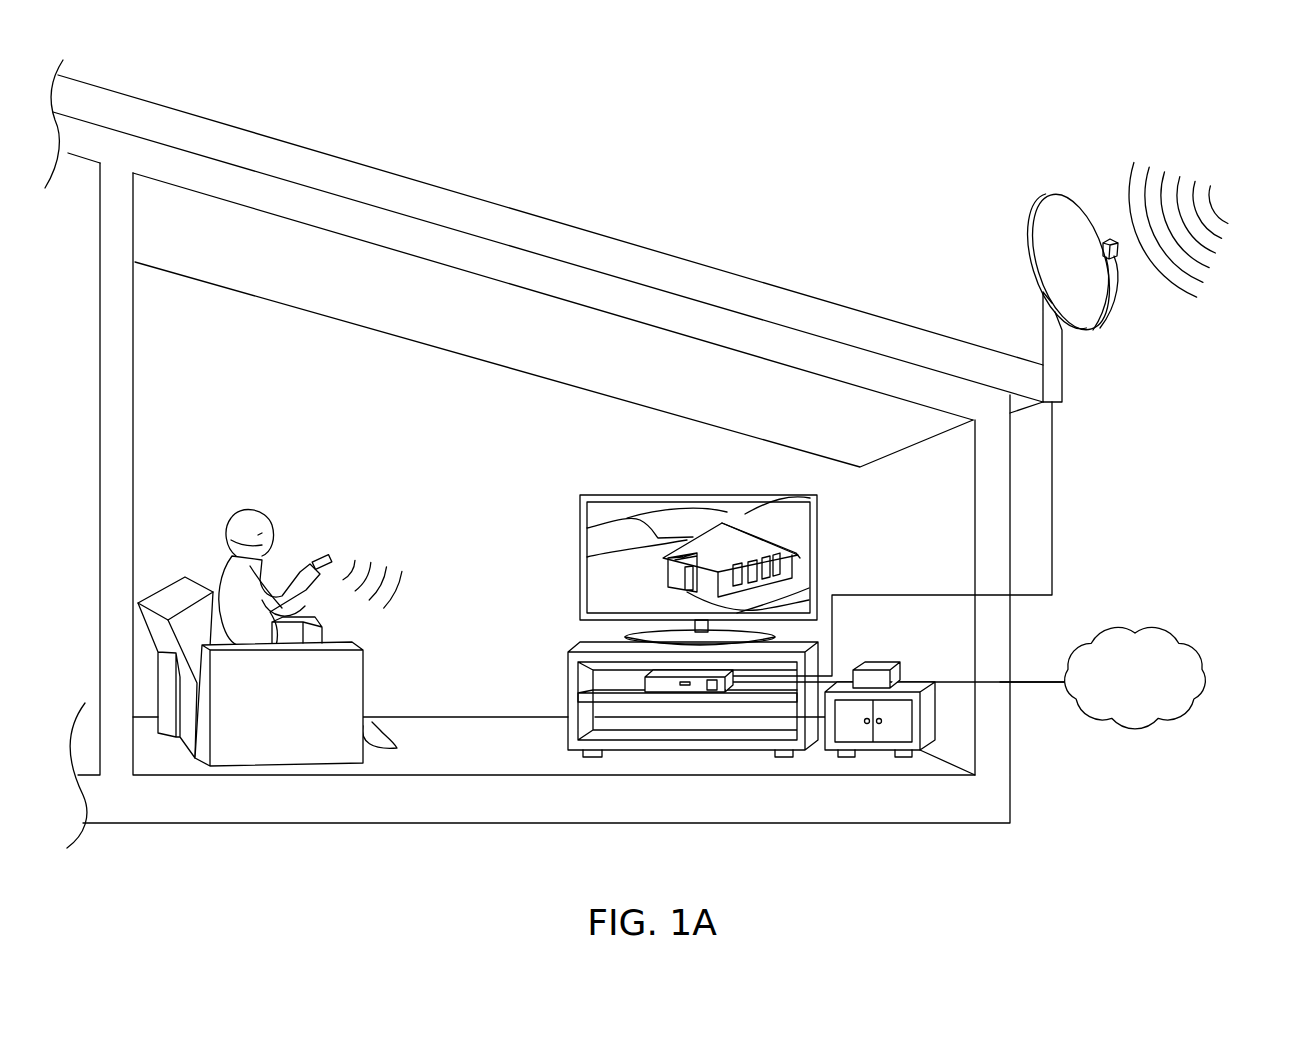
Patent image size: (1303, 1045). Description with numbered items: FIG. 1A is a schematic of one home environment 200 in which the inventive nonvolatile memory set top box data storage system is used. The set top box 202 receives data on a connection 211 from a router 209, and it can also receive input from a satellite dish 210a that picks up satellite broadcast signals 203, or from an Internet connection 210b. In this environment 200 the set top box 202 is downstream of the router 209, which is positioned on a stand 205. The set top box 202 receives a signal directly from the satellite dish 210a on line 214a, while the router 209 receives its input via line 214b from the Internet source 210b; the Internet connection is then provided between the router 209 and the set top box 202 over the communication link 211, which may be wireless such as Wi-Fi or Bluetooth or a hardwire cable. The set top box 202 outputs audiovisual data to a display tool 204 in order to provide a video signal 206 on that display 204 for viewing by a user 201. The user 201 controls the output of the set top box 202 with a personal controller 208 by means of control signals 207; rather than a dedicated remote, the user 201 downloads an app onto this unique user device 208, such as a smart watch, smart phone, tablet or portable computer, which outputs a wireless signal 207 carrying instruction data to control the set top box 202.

The environment 200 is at (968, 88).
The user 201 is at (218, 565).
The set top box 202 is at (640, 678).
The satellite broadcast signals 203 is at (1198, 162).
The television display 204 is at (650, 497).
The stand 205 is at (878, 742).
The video signal 206 is at (683, 512).
The control signals 207 is at (440, 582).
The personal controller 208 is at (320, 556).
The router 209 is at (893, 665).
The satellite dish 210a is at (1063, 215).
The Internet source 210b is at (1122, 630).
The communication link 211 is at (840, 678).
The line 214a is at (1053, 520).
The line 214b is at (1038, 683).